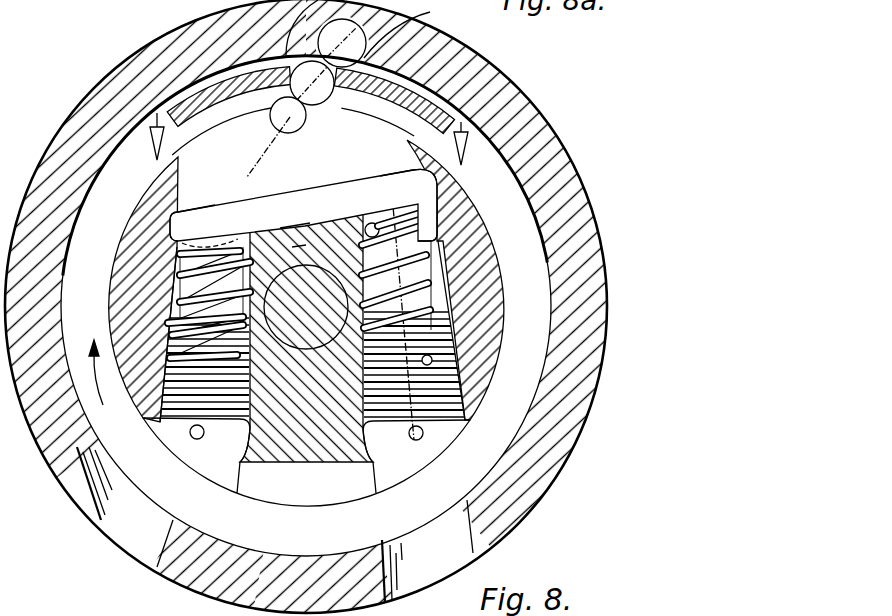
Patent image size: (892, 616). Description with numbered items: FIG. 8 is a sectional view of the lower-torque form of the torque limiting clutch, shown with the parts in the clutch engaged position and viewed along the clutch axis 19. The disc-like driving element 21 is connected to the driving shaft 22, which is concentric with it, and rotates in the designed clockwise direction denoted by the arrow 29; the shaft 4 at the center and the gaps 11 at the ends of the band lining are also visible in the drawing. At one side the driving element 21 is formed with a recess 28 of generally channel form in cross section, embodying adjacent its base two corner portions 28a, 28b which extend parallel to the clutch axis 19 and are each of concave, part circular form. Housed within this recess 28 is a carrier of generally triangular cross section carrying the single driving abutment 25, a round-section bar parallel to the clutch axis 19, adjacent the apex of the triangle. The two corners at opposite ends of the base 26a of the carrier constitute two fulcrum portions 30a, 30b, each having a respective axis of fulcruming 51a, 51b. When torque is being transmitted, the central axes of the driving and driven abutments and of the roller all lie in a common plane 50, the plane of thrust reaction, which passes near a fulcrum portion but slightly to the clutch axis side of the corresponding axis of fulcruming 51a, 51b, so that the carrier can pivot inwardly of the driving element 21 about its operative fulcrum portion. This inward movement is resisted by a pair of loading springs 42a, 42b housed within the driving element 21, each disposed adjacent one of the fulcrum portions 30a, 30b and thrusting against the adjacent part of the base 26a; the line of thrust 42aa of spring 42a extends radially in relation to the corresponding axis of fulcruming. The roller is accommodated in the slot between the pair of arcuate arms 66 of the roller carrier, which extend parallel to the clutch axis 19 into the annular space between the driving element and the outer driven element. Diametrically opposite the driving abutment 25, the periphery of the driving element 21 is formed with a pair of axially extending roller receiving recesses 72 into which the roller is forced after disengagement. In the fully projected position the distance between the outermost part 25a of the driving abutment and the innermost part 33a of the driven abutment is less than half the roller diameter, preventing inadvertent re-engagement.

The driving element 21 is at (470, 354).
The arms 66 is at (207, 98).
The innermost part of abutment 33 33a is at (392, 17).
The outermost part of abutment 25 25a is at (300, 108).
The driving abutment 25 is at (289, 134).
The common plane 50 is at (262, 150).
The corner portion 28a is at (186, 232).
The corner portion 28b is at (438, 243).
The clutch axis 19 is at (306, 337).
The shaft 4 is at (306, 307).
The roller receiving recesses 72 is at (227, 477).
The loading spring 42b is at (187, 357).
The loading spring 42a is at (445, 315).
The line of thrust 42aa is at (420, 447).
The recess 28 is at (272, 234).
The fulcrum portion 30a is at (175, 231).
The fulcrum portion 30b is at (423, 195).
The axis of fulcruming 51a is at (198, 227).
The axis of fulcruming 51b is at (419, 174).
The base 26a is at (290, 245).
The driving shaft 22 is at (298, 247).
The gap 11 is at (310, 144).
The arrow 29 is at (102, 385).